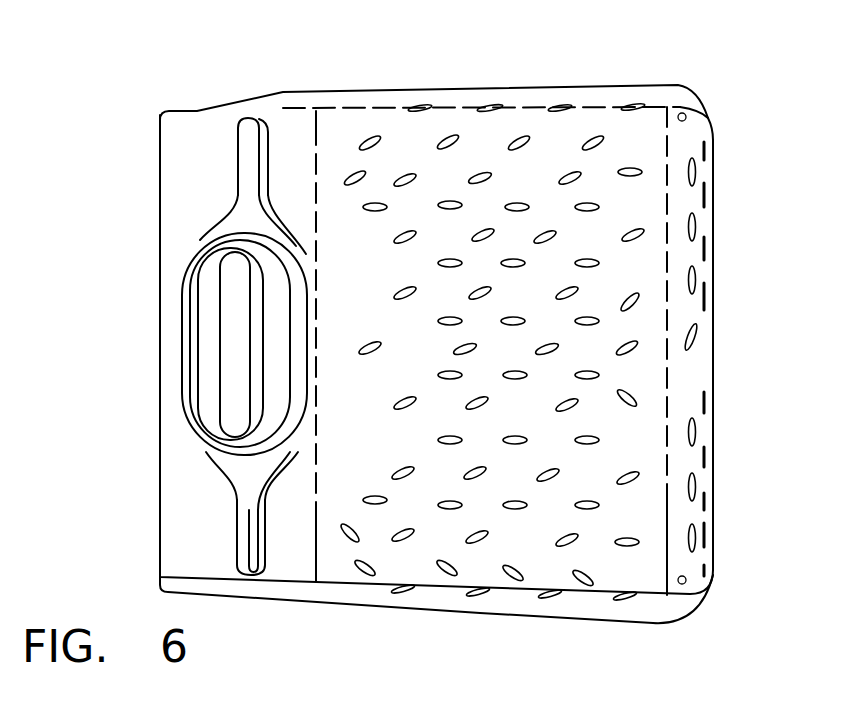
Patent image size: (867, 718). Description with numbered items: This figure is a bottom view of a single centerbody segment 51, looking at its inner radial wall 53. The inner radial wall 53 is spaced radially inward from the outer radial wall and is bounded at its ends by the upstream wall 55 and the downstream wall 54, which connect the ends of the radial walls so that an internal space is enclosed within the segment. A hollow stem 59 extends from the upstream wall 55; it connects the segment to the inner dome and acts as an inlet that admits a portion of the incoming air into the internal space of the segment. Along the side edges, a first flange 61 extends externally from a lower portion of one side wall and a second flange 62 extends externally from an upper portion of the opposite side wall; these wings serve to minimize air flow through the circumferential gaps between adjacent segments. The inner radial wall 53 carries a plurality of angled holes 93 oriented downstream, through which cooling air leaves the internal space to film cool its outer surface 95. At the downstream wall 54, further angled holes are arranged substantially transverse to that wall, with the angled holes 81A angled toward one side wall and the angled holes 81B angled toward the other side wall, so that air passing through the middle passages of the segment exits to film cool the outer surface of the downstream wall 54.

The centerbody segment 51 is at (508, 72).
The inner radial wall 53 is at (341, 127).
The downstream wall 54 is at (703, 367).
The upstream wall 55 is at (173, 175).
The stem 59 is at (183, 391).
The first flange 61 is at (455, 95).
The second flange 62 is at (512, 603).
The angled holes 81A is at (692, 223).
The angled holes 81B is at (692, 491).
The angled holes 93 is at (530, 323).
The outer surface 95 is at (370, 299).